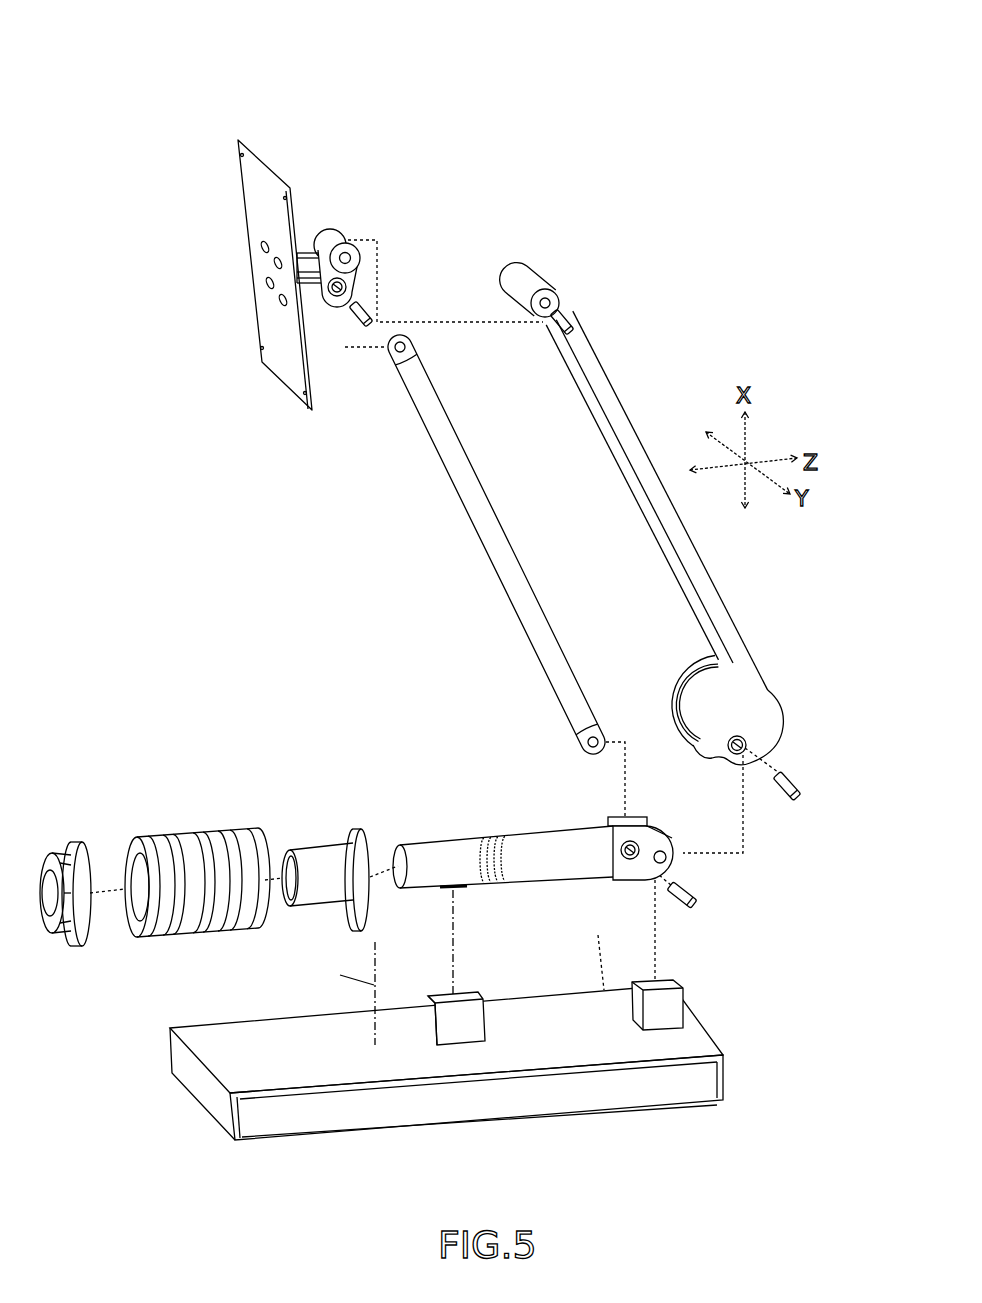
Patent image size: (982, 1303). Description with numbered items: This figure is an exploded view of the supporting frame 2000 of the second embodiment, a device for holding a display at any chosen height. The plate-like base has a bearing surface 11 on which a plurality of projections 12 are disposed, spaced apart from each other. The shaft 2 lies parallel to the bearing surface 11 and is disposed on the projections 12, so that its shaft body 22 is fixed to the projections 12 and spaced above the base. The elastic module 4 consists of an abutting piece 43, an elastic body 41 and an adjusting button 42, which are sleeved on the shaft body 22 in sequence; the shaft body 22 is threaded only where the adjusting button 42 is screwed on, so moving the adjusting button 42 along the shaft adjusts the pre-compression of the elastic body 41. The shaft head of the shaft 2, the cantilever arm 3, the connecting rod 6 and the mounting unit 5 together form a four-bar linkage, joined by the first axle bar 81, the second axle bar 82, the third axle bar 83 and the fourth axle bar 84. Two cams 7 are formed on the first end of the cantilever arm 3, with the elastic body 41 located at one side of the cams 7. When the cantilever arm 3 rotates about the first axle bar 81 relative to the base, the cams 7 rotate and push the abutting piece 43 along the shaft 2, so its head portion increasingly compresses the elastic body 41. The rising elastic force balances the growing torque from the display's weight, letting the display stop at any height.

The supporting frame 2000 is at (213, 20).
The mounting unit 5 is at (243, 138).
The third axle bar 83 is at (354, 309).
The connecting rod 6 is at (470, 497).
The cantilever arm 3 is at (618, 440).
The second axle bar 82 is at (562, 315).
The cams 7 is at (690, 697).
The first axle bar 81 is at (792, 780).
The elastic module 4 is at (175, 745).
The elastic body 41 is at (172, 830).
The adjusting button 42 is at (60, 850).
The abutting piece 43 is at (320, 845).
The shaft 2 is at (533, 835).
The shaft body 22 is at (551, 843).
The fourth axle bar 84 is at (696, 895).
The bearing surface 11 is at (562, 1015).
The projections 12 is at (460, 1020).